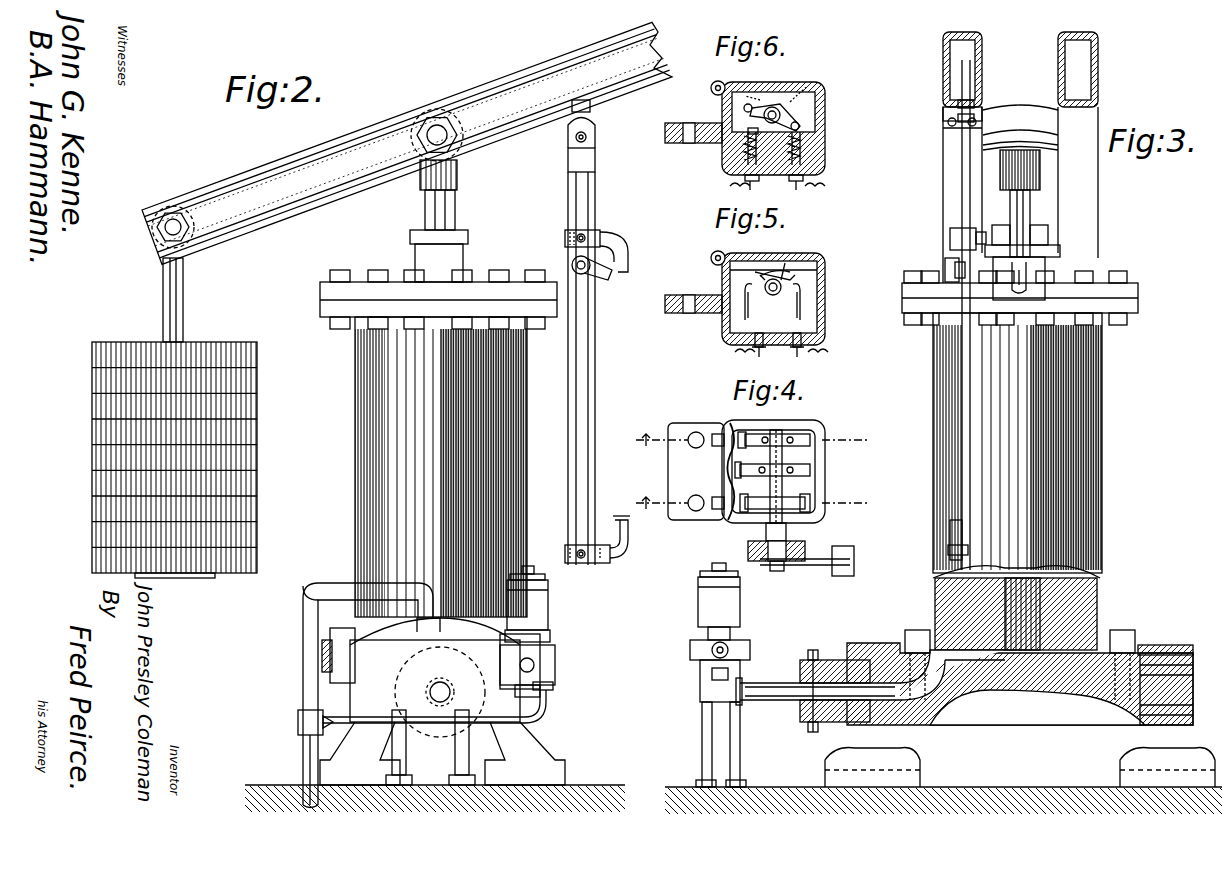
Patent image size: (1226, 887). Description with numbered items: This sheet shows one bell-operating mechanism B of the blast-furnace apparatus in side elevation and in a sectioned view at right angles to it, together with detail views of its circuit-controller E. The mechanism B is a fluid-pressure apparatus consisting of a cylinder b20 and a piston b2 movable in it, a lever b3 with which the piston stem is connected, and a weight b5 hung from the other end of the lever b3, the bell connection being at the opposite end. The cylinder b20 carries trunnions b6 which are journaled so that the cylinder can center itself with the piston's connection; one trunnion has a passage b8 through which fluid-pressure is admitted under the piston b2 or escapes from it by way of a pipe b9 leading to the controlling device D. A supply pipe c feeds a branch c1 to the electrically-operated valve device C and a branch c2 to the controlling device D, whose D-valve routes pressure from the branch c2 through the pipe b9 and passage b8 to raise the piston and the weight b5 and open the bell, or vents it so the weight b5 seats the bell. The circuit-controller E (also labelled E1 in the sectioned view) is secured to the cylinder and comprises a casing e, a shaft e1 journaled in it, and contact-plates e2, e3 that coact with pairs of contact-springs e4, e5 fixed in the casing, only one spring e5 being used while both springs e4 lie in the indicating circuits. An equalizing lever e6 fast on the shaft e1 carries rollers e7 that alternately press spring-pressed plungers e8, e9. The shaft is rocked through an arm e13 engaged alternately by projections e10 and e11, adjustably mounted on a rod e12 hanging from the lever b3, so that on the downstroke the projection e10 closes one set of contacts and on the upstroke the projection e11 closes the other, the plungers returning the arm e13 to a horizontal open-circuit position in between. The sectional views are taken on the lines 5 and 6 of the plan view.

In FIG. 2, the operating mechanism B is at (438, 427).
In FIG. 3, the operating mechanism B is at (1020, 422).
In FIG. 3, the piston b2 is at (1065, 622).
In FIG. 2, the lever b3 is at (407, 143).
In FIG. 3, the lever b3 is at (1058, 80).
In FIG. 2, the weight b5 is at (92, 454).
In FIG. 3, the trunnions b6 is at (840, 663).
In FIG. 3, the passage b8 is at (935, 715).
In FIG. 3, the pipe b9 is at (785, 702).
In FIG. 2, the cylinder b20 is at (441, 467).
In FIG. 3, the cylinder b20 is at (1017, 443).
In FIG. 2, the electrically-operated valve device C is at (533, 606).
In FIG. 3, the electrically-operated valve device C is at (712, 606).
In FIG. 2, the pipe c is at (303, 760).
In FIG. 2, the branch c1 is at (507, 722).
In FIG. 2, the branch c2 is at (303, 631).
In FIG. 2, the controlling device D is at (442, 701).
In FIG. 2, the circuit-controller E is at (566, 332).
In FIG. 6, the circuit-controller E is at (745, 119).
In FIG. 5, the circuit-controller E is at (745, 288).
In FIG. 4, the circuit-controller E is at (746, 456).
In FIG. 3, the valve casing E1 is at (1030, 266).
In FIG. 6, the casing e is at (812, 92).
In FIG. 5, the casing e is at (825, 305).
In FIG. 4, the casing e is at (812, 432).
In FIG. 6, the shaft e1 is at (800, 118).
In FIG. 5, the shaft e1 is at (770, 292).
In FIG. 4, the shaft e1 is at (790, 482).
In FIG. 6, the contact-plate e2 is at (790, 112).
In FIG. 4, the contact-plate e2 is at (808, 470).
In FIG. 5, the contact-plate e3 is at (795, 278).
In FIG. 4, the contact-plate e3 is at (808, 438).
In FIG. 6, the contact-springs e4 is at (800, 118).
In FIG. 4, the contact-springs e4 is at (812, 504).
In FIG. 5, the contact-springs e5 is at (796, 312).
In FIG. 6, the lever e6 is at (758, 98).
In FIG. 4, the lever e6 is at (770, 506).
In FIG. 6, the rollers e7 is at (800, 128).
In FIG. 4, the rollers e7 is at (740, 500).
In FIG. 6, the spring-pressed plunger e8 is at (804, 140).
In FIG. 6, the spring-pressed plunger e9 is at (752, 134).
In FIG. 2, the projection e10 is at (614, 240).
In FIG. 3, the projection e10 is at (950, 242).
In FIG. 2, the projection e11 is at (612, 562).
In FIG. 3, the projection e11 is at (950, 528).
In FIG. 2, the rod e12 is at (582, 382).
In FIG. 3, the rod e12 is at (962, 192).
In FIG. 2, the arm e13 is at (612, 280).
In FIG. 3, the arm e13 is at (945, 275).
In FIG. 4, the arm e13 is at (854, 562).
In FIG. 4, the section line 5 is at (748, 444).
In FIG. 4, the section line 6 is at (749, 506).